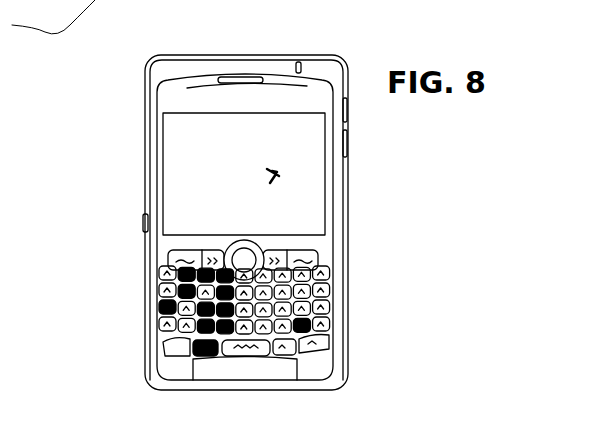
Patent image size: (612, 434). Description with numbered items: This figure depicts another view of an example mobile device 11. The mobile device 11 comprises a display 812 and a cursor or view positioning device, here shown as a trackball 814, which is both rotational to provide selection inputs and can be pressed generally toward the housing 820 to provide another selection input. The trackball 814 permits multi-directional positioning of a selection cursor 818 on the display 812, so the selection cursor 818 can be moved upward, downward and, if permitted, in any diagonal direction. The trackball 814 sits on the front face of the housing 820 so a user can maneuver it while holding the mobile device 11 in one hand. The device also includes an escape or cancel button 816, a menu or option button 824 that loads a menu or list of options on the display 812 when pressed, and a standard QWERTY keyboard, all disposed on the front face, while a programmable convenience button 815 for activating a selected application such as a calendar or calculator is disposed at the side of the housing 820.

The mobile device 11 is at (274, 47).
The display 812 is at (222, 148).
The trackball 814 is at (260, 242).
The programmable convenience button 815 is at (143, 222).
The escape or cancel button 816 is at (291, 240).
The selection cursor 818 is at (284, 164).
The housing 820 is at (170, 365).
The menu or option button 824 is at (208, 239).